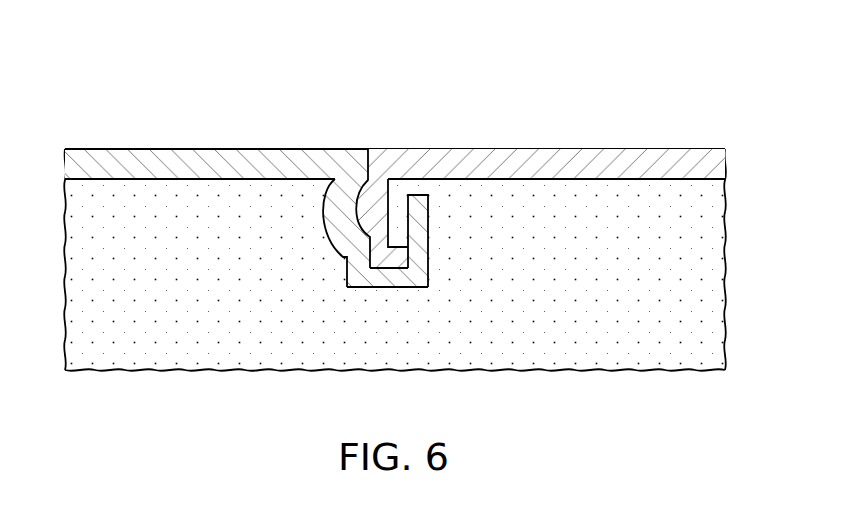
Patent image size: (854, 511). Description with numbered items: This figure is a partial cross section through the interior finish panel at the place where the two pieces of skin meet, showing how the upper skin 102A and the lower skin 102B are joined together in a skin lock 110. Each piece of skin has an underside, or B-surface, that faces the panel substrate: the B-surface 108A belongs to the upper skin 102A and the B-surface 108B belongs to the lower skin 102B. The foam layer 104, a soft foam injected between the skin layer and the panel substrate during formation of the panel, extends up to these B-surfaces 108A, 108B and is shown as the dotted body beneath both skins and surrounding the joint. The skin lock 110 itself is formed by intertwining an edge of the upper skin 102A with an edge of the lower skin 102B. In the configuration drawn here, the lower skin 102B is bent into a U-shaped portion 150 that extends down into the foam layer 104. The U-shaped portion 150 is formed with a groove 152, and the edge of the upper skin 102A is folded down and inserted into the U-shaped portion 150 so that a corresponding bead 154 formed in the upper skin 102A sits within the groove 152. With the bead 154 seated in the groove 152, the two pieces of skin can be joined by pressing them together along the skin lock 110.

The upper skin 102A is at (542, 154).
The lower skin 102B is at (395, 164).
The foam layer 104 is at (718, 302).
The B-surface of upper skin 108A is at (558, 181).
The B-surface of lower skin 108B is at (395, 199).
The skin lock 110 is at (387, 300).
The U-shaped portion 150 is at (380, 223).
The groove 152 is at (355, 213).
The bead 154 is at (378, 218).